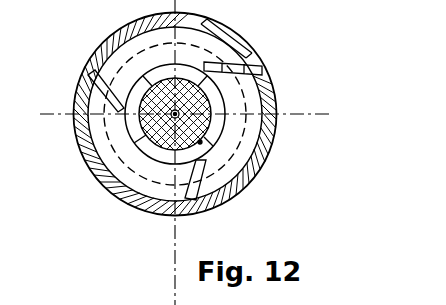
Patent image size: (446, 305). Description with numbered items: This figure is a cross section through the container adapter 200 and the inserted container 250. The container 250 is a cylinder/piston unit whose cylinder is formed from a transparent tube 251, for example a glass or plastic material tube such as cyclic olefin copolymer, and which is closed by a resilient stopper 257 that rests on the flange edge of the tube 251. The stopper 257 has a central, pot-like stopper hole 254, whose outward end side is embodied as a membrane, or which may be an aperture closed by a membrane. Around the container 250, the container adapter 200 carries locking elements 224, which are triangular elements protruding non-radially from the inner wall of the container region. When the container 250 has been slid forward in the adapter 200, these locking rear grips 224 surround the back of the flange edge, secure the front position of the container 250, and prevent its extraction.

The container adapter 200 is at (243, 34).
The locking element 224 is at (262, 71).
The stopper hole 254 is at (213, 114).
The stopper 257 is at (200, 142).
The transparent tube 251 is at (214, 156).
The container 250 is at (236, 174).